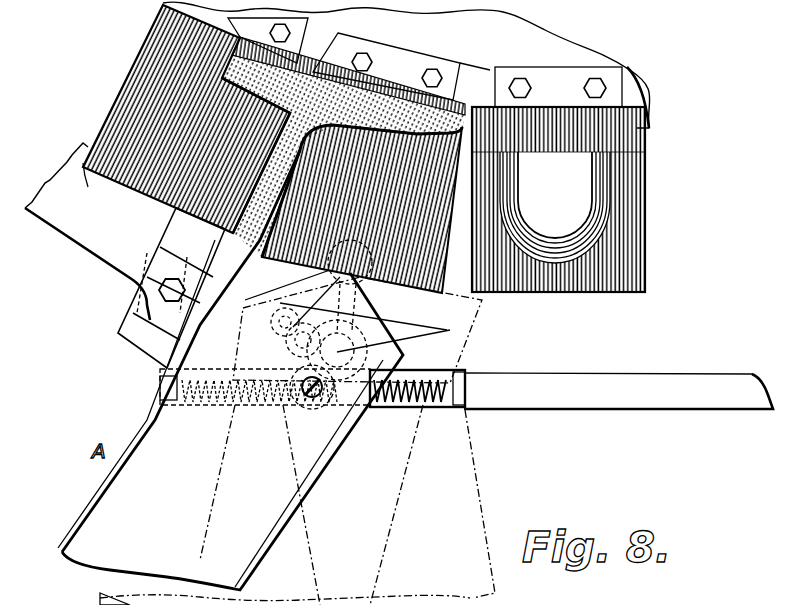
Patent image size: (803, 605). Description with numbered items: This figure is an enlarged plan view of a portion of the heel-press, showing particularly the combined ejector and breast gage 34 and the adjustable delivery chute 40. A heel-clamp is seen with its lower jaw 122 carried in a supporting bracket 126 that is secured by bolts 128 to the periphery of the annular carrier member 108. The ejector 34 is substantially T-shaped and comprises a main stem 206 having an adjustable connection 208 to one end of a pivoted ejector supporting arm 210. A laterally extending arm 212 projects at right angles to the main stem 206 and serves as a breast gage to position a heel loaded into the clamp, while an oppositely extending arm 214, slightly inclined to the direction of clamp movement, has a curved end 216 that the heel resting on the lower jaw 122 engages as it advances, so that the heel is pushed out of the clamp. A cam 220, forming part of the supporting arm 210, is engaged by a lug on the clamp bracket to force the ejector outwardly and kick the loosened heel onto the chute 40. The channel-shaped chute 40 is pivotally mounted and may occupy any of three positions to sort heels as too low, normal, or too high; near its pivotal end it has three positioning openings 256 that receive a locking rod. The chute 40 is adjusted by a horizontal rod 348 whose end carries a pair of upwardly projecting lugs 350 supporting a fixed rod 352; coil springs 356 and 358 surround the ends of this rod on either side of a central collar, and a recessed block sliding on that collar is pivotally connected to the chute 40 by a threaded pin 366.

The combined ejector and breast gage 34 is at (340, 76).
The adjustable chute 40 is at (190, 422).
The annular carrier member 108 is at (359, 56).
The lower jaw 122 is at (138, 62).
The supporting bracket 126 is at (530, 98).
The bolts 128 is at (357, 50).
The main stem 206 is at (357, 311).
The adjustable connection 208 is at (150, 296).
The ejector supporting arm 210 is at (108, 245).
The laterally extending arm 212 is at (250, 58).
The oppositely extending arm 214 is at (388, 100).
The curved end 216 is at (463, 116).
The cam 220 is at (59, 156).
The positioning openings 256 is at (447, 330).
The horizontal rod 348 is at (688, 384).
The lugs 350 is at (160, 376).
The rod 352 is at (468, 378).
The coil spring 356 is at (240, 370).
The coil spring 358 is at (420, 403).
The threaded pin 366 is at (318, 398).